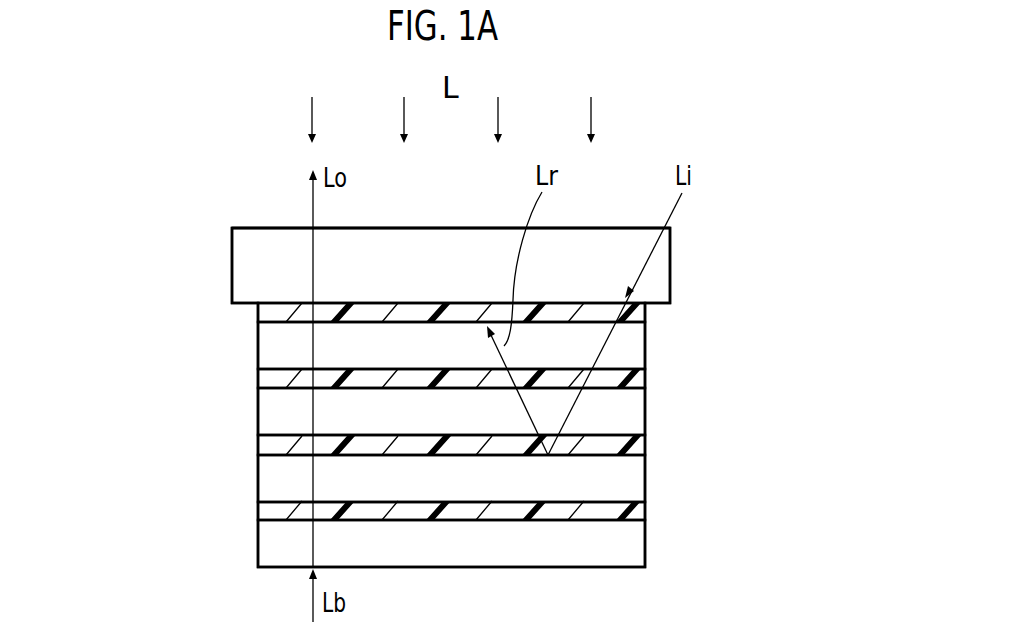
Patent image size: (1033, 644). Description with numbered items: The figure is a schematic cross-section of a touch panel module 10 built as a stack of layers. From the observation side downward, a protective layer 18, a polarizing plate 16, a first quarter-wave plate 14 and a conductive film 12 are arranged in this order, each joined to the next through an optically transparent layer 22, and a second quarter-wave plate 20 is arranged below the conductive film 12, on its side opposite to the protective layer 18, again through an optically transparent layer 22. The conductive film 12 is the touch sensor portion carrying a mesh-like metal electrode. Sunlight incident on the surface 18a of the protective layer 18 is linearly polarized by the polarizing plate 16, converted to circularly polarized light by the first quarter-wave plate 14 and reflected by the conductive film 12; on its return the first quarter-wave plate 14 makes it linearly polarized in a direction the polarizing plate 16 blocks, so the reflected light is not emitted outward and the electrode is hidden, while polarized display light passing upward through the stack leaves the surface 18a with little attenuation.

The touch panel module 10 is at (712, 204).
The protective layer 18 is at (670, 265).
The surface of the protective layer 18a is at (270, 228).
The optically transparent layer 22 is at (645, 312).
The polarizing plate 16 is at (645, 345).
The first λ/4 plate 14 is at (645, 412).
The conductive film 12 is at (645, 479).
The second λ/4 plate 20 is at (645, 545).